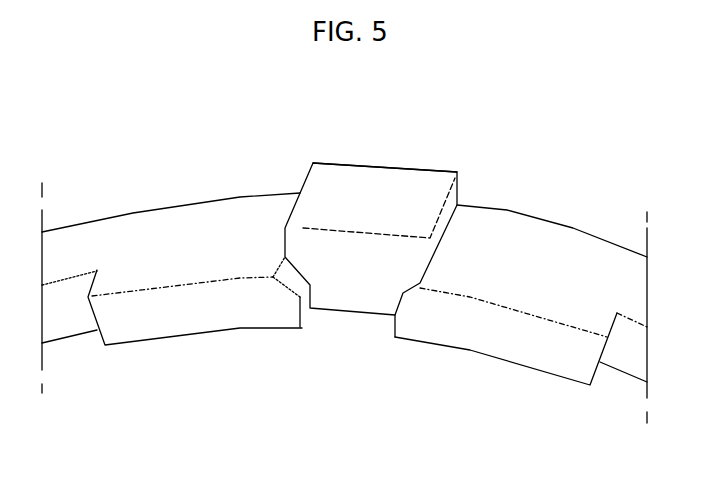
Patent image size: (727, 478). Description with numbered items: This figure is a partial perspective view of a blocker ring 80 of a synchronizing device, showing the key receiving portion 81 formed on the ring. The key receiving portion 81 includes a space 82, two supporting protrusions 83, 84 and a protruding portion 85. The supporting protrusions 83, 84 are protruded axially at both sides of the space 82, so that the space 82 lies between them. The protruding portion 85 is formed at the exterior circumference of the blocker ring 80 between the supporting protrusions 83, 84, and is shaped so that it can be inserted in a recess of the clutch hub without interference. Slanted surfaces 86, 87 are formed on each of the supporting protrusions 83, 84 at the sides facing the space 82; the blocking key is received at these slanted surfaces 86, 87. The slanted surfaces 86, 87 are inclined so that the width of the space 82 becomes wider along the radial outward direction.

The blocker ring 80 is at (571, 238).
The key receiving portion 81 is at (333, 357).
The space 82 is at (350, 318).
The supporting protrusion 83 is at (175, 327).
The supporting protrusion 84 is at (493, 345).
The protruding portion 85 is at (385, 172).
The slanted surface 86 is at (292, 287).
The slanted surface 87 is at (385, 313).